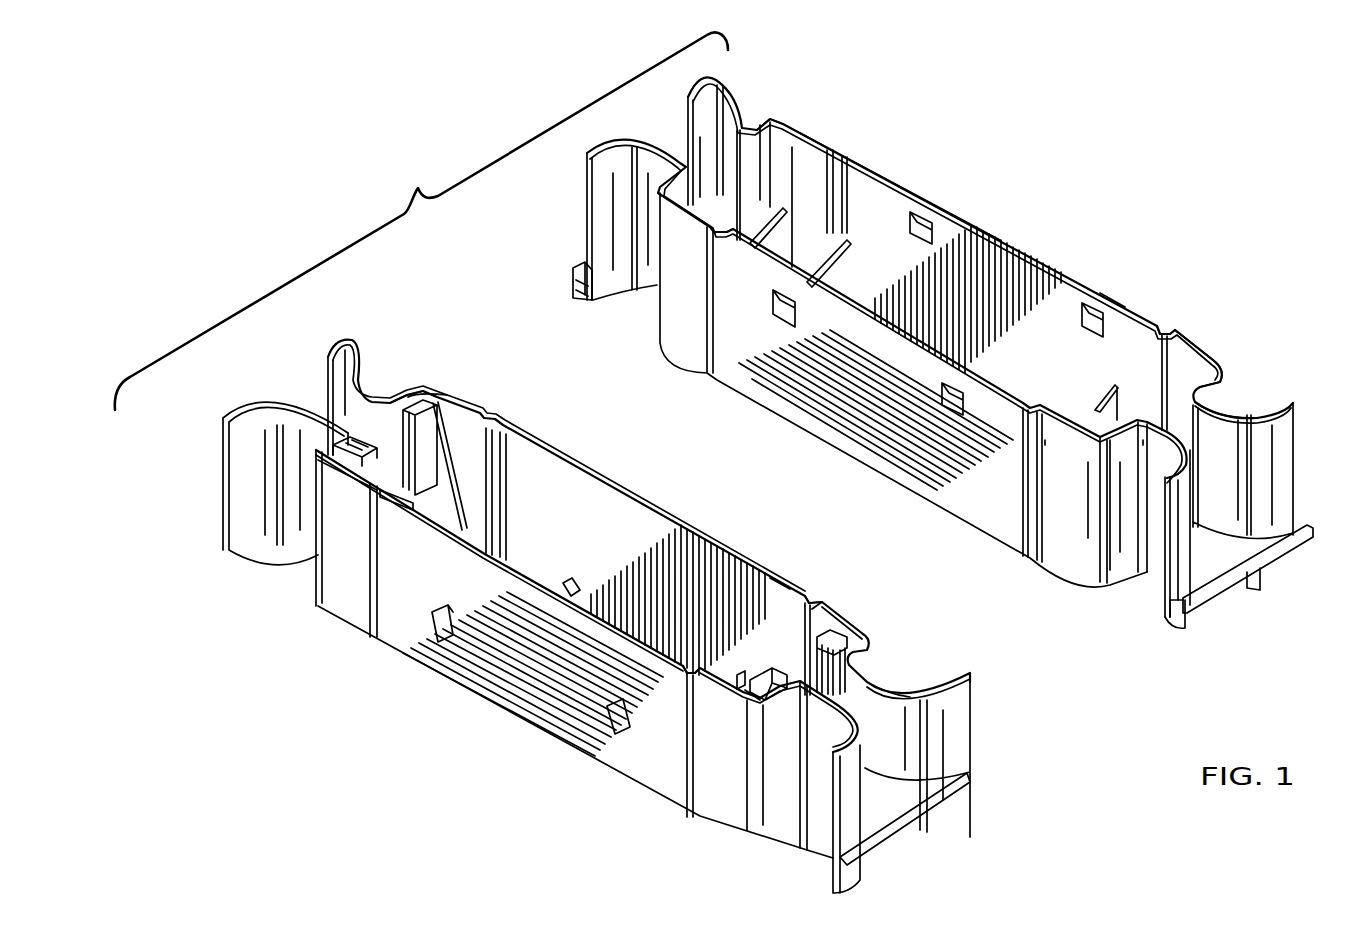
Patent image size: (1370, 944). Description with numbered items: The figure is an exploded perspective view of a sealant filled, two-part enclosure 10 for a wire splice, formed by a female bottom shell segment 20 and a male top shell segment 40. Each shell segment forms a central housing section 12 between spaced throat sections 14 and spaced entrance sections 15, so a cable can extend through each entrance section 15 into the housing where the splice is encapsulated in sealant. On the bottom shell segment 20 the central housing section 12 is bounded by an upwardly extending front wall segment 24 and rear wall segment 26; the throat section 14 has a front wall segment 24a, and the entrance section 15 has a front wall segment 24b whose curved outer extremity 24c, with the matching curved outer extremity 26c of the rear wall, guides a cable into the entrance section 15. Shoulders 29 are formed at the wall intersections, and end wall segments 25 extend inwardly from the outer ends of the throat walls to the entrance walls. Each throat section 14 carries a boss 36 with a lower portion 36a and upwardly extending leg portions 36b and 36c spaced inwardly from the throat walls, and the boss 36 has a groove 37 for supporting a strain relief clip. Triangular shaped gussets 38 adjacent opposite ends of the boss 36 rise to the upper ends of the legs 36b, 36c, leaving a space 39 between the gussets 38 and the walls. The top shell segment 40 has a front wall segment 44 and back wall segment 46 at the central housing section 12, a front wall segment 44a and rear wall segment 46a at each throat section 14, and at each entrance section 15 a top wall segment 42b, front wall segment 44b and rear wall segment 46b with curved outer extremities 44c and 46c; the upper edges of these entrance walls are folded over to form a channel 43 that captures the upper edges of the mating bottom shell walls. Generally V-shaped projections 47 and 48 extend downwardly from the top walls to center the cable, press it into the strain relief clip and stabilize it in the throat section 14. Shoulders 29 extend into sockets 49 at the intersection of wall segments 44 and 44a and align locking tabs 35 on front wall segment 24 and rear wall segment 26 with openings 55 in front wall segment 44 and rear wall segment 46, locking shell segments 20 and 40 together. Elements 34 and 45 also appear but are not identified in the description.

The enclosure 10 is at (421, 221).
The central housing section 12 is at (1113, 314).
The throat section 14 is at (1175, 358).
The entrance section 15 is at (1210, 410).
The female bottom shell segment 20 is at (633, 480).
The front wall segment 24 is at (553, 713).
The front wall segment 24a is at (335, 583).
The front wall segment 24b is at (297, 537).
The curved outer extremity 24c is at (237, 537).
The end wall segment 25 is at (863, 655).
The rear wall segment 26 is at (650, 518).
The curved outer extremity 26c is at (330, 352).
The shoulder 29 is at (365, 617).
The lug 34 is at (563, 580).
The locking tab 35 is at (448, 613).
The boss 36 is at (424, 457).
The lower portion 36a is at (390, 507).
The leg portion 36b is at (325, 476).
The leg portion 36c is at (452, 400).
The groove 37 is at (333, 441).
The triangular shaped gusset 38 is at (443, 520).
The space 39 is at (447, 395).
The male top shell segment 40 is at (712, 388).
The top wall segment 42b is at (1213, 540).
The channel 43 is at (585, 280).
The front wall segment 44 is at (960, 252).
The front wall segment 44a is at (817, 133).
The front wall segment 44b is at (721, 120).
The curved outer extremity 44c is at (686, 92).
The bump 45 is at (1217, 390).
The back wall segment 46 is at (970, 508).
The rear wall segment 46a is at (1070, 552).
The rear wall segment 46b is at (1147, 572).
The curved outer extremity 46c is at (585, 200).
The V-shaped projection 47 is at (780, 247).
The V-shaped projection 48 is at (833, 283).
The socket 49 is at (850, 157).
The opening 55 is at (935, 210).